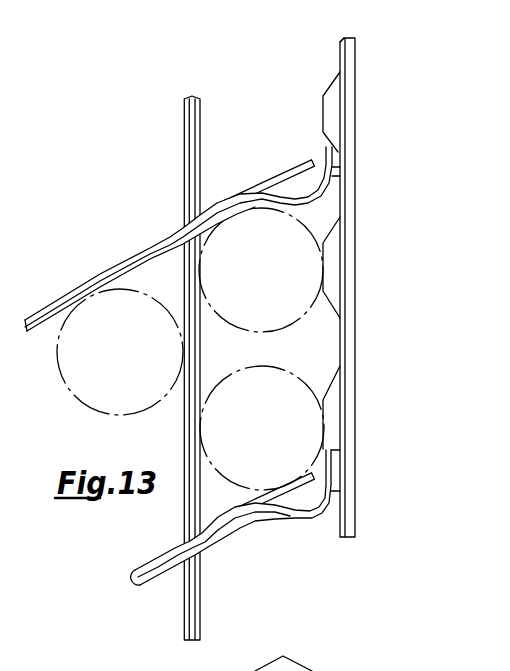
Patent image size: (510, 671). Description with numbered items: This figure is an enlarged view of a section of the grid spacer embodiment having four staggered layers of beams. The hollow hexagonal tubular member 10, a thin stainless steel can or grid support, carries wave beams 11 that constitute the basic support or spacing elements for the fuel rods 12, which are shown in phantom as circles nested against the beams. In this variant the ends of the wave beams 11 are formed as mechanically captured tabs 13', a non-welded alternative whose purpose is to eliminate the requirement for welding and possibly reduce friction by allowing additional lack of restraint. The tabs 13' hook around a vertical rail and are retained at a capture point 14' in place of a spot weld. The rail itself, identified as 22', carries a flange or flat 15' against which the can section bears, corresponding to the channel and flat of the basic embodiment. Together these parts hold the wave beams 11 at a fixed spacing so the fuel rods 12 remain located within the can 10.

The tubular member 10 is at (252, 84).
The wave beams 11 is at (187, 153).
The fuel rod 12 is at (128, 338).
The mechanically captured tab 13' is at (178, 346).
The mounting tab 14' is at (379, 329).
The rail flange 15' is at (319, 46).
The support rail 22' is at (373, 287).